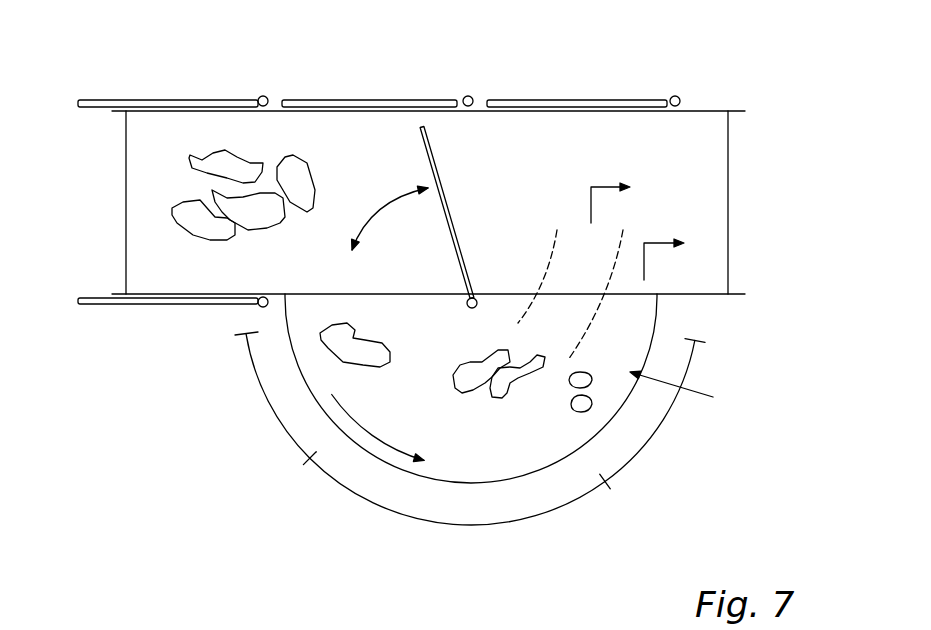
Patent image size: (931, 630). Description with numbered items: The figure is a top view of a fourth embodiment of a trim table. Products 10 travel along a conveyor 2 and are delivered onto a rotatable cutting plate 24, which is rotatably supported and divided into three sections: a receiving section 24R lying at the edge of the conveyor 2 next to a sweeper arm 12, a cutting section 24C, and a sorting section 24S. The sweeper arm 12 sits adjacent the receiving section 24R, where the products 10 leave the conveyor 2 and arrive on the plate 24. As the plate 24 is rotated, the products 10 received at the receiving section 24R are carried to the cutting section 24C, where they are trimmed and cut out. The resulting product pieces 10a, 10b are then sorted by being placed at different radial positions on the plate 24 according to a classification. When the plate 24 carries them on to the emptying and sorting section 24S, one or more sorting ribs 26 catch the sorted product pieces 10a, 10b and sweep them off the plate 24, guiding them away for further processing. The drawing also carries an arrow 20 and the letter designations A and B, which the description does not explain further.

The conveyor 2 is at (567, 147).
The products 10 is at (290, 127).
The product piece 10a is at (508, 382).
The product piece 10b is at (587, 387).
The sweeper arm 12 is at (427, 127).
The direction arrow of drum rotation 20 is at (688, 393).
The rotatable cutting plate 24 is at (532, 458).
The receiving section 24R is at (276, 428).
The cutting section 24C is at (469, 555).
The sorting section 24S is at (696, 475).
The sorting ribs 26 is at (553, 230).
The position A is at (564, 345).
The position B is at (623, 363).